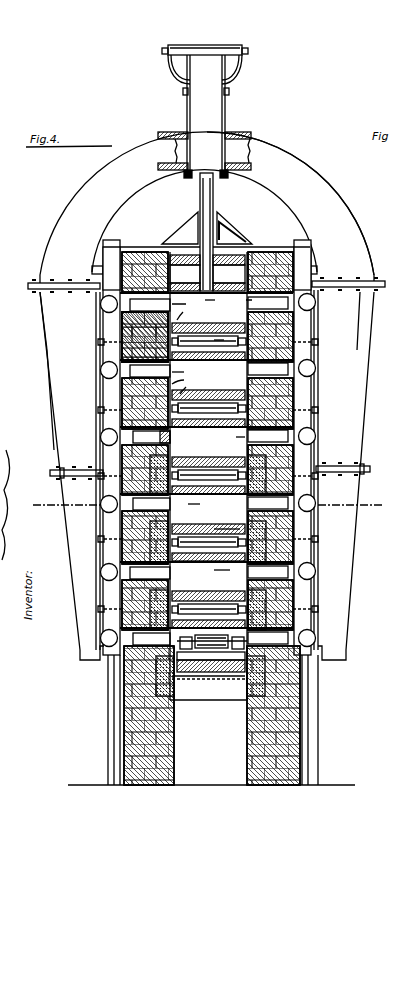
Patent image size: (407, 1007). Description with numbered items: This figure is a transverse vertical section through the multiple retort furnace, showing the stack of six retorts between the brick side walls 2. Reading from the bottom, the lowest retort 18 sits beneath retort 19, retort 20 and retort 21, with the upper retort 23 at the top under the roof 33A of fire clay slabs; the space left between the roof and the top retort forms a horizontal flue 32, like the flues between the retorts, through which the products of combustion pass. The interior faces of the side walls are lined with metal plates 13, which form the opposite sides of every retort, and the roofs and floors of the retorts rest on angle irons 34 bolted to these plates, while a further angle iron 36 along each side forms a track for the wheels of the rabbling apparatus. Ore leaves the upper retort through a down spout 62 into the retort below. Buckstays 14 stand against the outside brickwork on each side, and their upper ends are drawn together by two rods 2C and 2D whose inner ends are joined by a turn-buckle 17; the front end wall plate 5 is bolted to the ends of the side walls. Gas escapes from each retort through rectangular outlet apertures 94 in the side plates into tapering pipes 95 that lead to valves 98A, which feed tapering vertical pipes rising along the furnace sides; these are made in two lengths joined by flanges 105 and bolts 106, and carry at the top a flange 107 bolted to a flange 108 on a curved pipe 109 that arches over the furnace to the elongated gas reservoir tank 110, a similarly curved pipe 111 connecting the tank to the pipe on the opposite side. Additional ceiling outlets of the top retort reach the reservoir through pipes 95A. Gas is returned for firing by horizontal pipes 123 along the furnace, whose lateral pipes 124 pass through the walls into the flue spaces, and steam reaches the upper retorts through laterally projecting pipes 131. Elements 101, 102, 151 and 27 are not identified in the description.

The elongated gas reservoir tank 110 is at (210, 108).
The curved pipe 109 is at (82, 186).
The similarly curved pipe 111 is at (325, 192).
The flange 107 is at (40, 287).
The casing side wall 101 is at (60, 348).
The flange 108 is at (40, 280).
The flanges 105 is at (50, 474).
The bolts 106 is at (64, 470).
The wall plate 102 is at (100, 378).
The rod 2C is at (153, 248).
The rod 2D is at (266, 247).
The side walls 2 is at (128, 709).
The buckstays 14 is at (117, 727).
The valve 98A is at (100, 304).
The horizontally extending pipes 123 is at (98, 410).
The pipe 95 is at (206, 469).
The pipes 95A is at (212, 193).
The roof 33A is at (180, 258).
The turn-buckle 17 is at (232, 252).
The horizontal flue 32 is at (185, 273).
The laterally projecting pipes 131 is at (221, 299).
The lateral pipes 124 is at (235, 688).
The angle iron 36 is at (246, 583).
The upper retort 23 is at (213, 307).
The outlet apertures 94 is at (246, 306).
The down spout 62 is at (216, 344).
The plate 151 is at (187, 378).
The angle irons 34 is at (187, 485).
The retort 21 is at (235, 442).
The retort 20 is at (192, 516).
The metal plates 13 is at (223, 528).
The retort 19 is at (223, 570).
The shaft 27 is at (204, 672).
The retort 18 is at (200, 672).
The cast iron plate 5 is at (205, 507).